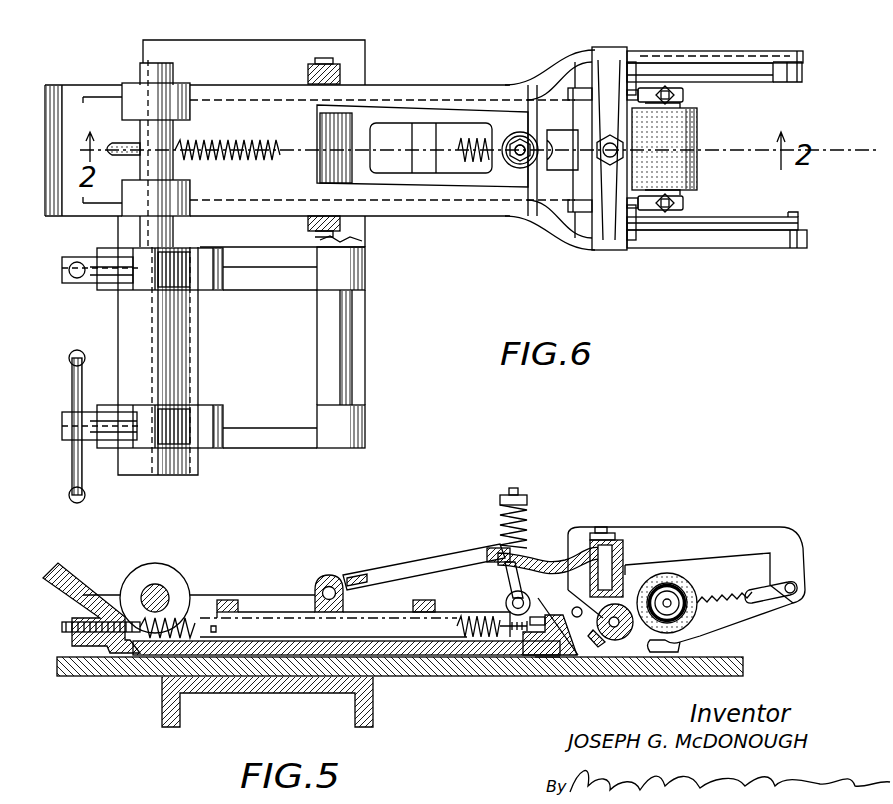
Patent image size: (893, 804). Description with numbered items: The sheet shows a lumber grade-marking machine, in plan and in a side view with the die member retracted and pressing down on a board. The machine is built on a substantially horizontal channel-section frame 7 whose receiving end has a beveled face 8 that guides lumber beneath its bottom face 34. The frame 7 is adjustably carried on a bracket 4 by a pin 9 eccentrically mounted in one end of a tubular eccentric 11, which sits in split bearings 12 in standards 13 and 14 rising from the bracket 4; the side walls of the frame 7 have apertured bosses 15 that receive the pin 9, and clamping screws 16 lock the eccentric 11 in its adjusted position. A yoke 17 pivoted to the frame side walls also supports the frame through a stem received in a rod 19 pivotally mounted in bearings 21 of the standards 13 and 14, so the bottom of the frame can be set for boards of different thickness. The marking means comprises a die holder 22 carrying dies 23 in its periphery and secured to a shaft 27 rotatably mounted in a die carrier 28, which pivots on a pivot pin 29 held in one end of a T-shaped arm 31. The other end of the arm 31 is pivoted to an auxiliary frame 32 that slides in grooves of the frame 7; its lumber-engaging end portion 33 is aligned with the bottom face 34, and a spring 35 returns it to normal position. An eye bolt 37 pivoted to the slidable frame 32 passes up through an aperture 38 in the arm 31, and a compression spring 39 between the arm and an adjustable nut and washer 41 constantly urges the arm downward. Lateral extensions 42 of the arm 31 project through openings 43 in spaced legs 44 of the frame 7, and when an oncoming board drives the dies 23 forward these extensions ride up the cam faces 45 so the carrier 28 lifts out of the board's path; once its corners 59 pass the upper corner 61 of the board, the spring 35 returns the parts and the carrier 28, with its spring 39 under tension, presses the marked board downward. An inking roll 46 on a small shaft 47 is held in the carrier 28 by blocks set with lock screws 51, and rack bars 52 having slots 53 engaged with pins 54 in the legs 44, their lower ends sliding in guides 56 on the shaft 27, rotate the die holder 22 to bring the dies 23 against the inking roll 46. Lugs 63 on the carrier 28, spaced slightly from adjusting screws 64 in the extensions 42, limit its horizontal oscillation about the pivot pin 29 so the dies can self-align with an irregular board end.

In FIG. 6, the bracket 4 is at (365, 360).
In FIG. 5, the bracket 4 is at (288, 690).
In FIG. 6, the frame 7 is at (408, 87).
In FIG. 5, the frame 7 is at (260, 595).
In FIG. 5, the beveled face 8 is at (105, 650).
In FIG. 6, the pin 9 is at (145, 72).
In FIG. 5, the pin 9 is at (150, 588).
In FIG. 6, the eccentric 11 is at (182, 350).
In FIG. 6, the split bearings 12 is at (222, 290).
In FIG. 6, the standard 13 is at (287, 270).
In FIG. 6, the standard 14 is at (275, 452).
In FIG. 6, the apertured bosses 15 is at (182, 90).
In FIG. 5, the apertured bosses 15 is at (128, 585).
In FIG. 6, the clamping screws 16 is at (85, 284).
In FIG. 5, the clamping screws 16 is at (101, 627).
In FIG. 6, the yoke 17 is at (330, 62).
In FIG. 6, the rod 19 is at (340, 318).
In FIG. 6, the bearings 21 is at (360, 266).
In FIG. 5, the die holder 22 is at (618, 642).
In FIG. 5, the dies 23 is at (590, 632).
In FIG. 5, the shaft 27 is at (633, 648).
In FIG. 6, the die carrier 28 is at (686, 96).
In FIG. 5, the die carrier 28 is at (622, 570).
In FIG. 6, the pivot pin 29 is at (606, 165).
In FIG. 5, the pivot pin 29 is at (601, 526).
In FIG. 6, the T-shaped arm 31 is at (478, 110).
In FIG. 5, the T-shaped arm 31 is at (412, 562).
In FIG. 6, the auxiliary frame 32 is at (425, 130).
In FIG. 5, the auxiliary frame 32 is at (232, 600).
In FIG. 5, the lumber-engaging end portion 33 is at (550, 657).
In FIG. 5, the bottom face 34 is at (480, 656).
In FIG. 6, the spring 35 is at (195, 140).
In FIG. 5, the spring 35 is at (178, 614).
In FIG. 6, the eye bolt 37 is at (517, 142).
In FIG. 5, the eye bolt 37 is at (514, 488).
In FIG. 5, the aperture 38 is at (497, 548).
In FIG. 5, the compression spring 39 is at (525, 512).
In FIG. 6, the nut and washer 41 is at (512, 165).
In FIG. 5, the nut and washer 41 is at (522, 494).
In FIG. 6, the lateral extensions 42 is at (608, 46).
In FIG. 5, the openings 43 is at (722, 590).
In FIG. 6, the legs 44 is at (730, 50).
In FIG. 5, the legs 44 is at (686, 530).
In FIG. 5, the cam face 45 is at (768, 580).
In FIG. 6, the inking roll 46 is at (698, 128).
In FIG. 5, the inking roll 46 is at (711, 560).
In FIG. 5, the shaft 47 is at (666, 598).
In FIG. 6, the lock screws 51 is at (666, 90).
In FIG. 6, the rack bars 52 is at (747, 72).
In FIG. 5, the rack bars 52 is at (752, 588).
In FIG. 5, the slot 53 is at (776, 580).
In FIG. 6, the pin 54 is at (792, 82).
In FIG. 5, the pin 54 is at (795, 582).
In FIG. 6, the guides 56 is at (630, 62).
In FIG. 5, the corners 59 is at (603, 655).
In FIG. 5, the upper corner 61 is at (745, 655).
In FIG. 6, the lugs 63 is at (573, 90).
In FIG. 5, the lugs 63 is at (527, 610).
In FIG. 6, the adjusting screws 64 is at (583, 92).